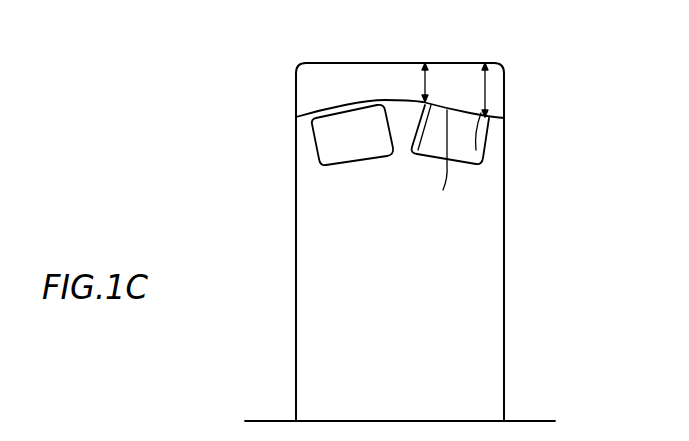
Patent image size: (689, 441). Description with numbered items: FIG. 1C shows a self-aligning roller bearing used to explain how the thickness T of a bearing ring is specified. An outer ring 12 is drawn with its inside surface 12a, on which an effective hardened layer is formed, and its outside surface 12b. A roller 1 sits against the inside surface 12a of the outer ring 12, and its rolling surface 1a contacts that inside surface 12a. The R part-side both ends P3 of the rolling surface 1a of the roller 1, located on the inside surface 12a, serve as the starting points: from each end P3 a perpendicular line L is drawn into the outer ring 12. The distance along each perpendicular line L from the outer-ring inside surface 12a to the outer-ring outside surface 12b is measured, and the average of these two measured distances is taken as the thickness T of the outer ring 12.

The roller 1 is at (489, 142).
The rolling surface 1a is at (438, 167).
The outer ring 12 is at (373, 80).
The inside surface 12a is at (305, 120).
The outside surface 12b is at (335, 62).
The R part-side both ends P3 is at (413, 153).
The perpendicular line L is at (455, 90).